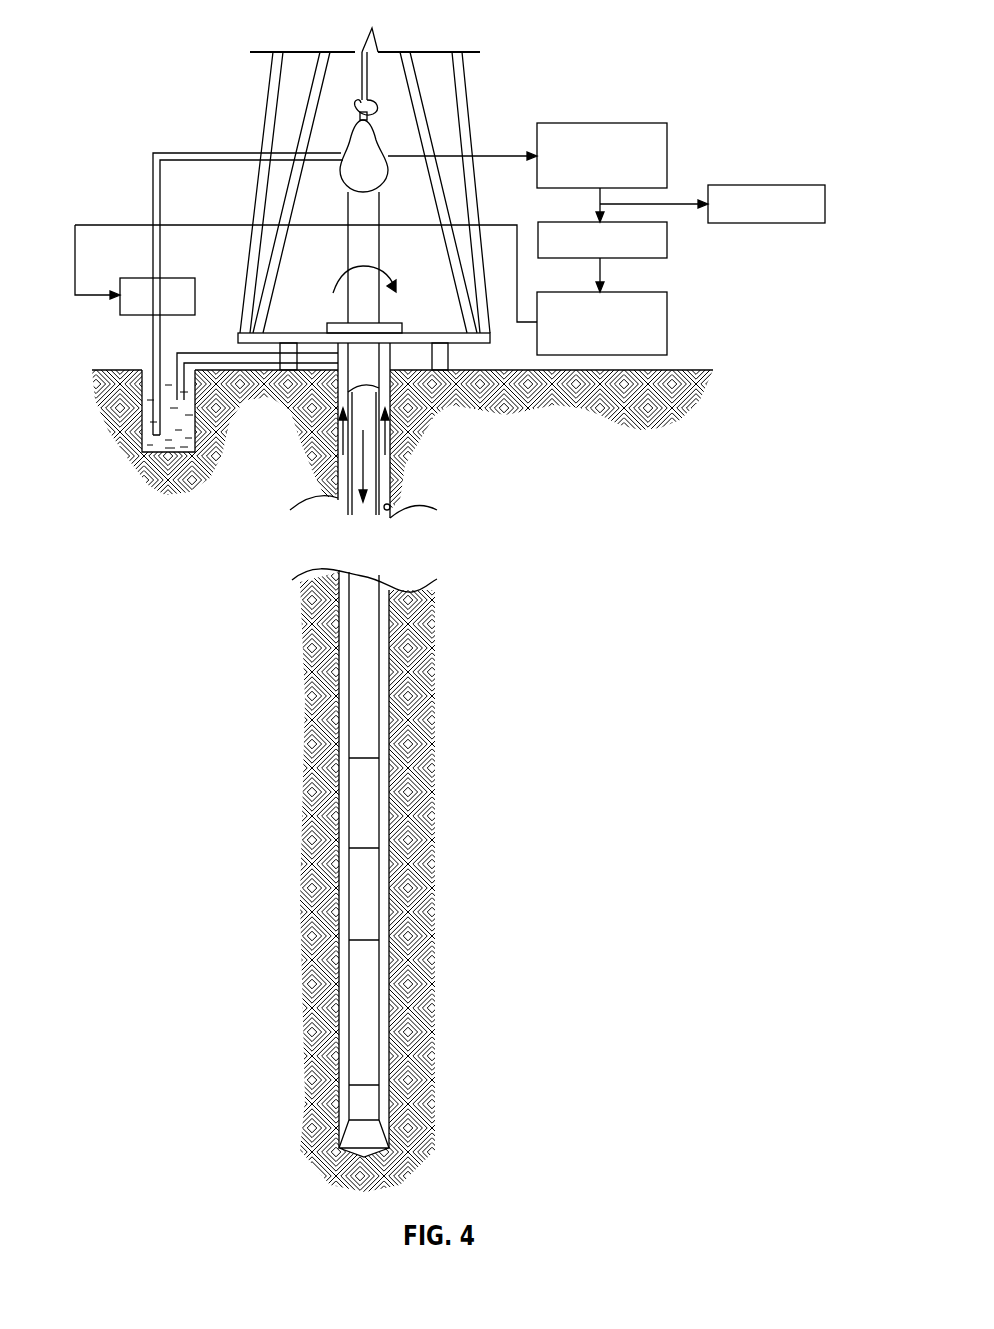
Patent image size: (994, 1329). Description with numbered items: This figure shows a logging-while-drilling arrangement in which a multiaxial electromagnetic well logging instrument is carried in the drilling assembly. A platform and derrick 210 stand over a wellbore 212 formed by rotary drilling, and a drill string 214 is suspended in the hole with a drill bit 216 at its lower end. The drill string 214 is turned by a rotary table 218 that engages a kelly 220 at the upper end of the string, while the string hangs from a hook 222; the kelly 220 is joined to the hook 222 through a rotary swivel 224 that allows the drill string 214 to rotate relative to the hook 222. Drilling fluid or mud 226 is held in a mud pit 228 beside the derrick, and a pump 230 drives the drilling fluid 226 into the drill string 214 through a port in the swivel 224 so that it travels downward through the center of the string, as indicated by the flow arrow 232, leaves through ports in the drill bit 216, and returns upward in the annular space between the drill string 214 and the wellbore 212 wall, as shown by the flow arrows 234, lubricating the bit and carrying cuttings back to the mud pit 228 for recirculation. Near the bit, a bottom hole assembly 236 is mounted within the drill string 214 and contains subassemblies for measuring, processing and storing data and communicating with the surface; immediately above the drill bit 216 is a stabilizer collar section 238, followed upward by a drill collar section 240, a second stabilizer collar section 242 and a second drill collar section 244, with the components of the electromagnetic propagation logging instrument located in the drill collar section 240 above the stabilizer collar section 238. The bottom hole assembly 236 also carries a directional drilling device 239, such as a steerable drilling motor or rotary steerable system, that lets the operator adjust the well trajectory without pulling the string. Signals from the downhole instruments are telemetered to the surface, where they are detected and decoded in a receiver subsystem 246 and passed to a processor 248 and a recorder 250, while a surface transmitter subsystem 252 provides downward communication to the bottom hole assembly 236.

The platform and derrick 210 is at (468, 358).
The wellbore 212 is at (393, 508).
The drill string 214 is at (374, 633).
The drill bit 216 is at (357, 1135).
The rotary table 218 is at (394, 323).
The kelly 220 is at (362, 250).
The hook 222 is at (380, 107).
The rotary swivel 224 is at (352, 138).
The drilling fluid 226 is at (150, 443).
The mud pit 228 is at (142, 398).
The pump 230 is at (150, 278).
The flow arrow 232 is at (360, 482).
The flow arrows 234 is at (387, 433).
The bottom hole assembly 236 is at (447, 1095).
The stabilizer collar section 238 is at (357, 1015).
The directional drilling device 239 is at (370, 1098).
The drill collar section 240 is at (357, 900).
The stabilizer collar section 242 is at (357, 803).
The drill collar section 244 is at (349, 660).
The receiver subsystem 246 is at (637, 123).
The processor 248 is at (568, 222).
The recorder 250 is at (797, 185).
The surface transmitter subsystem 252 is at (637, 292).